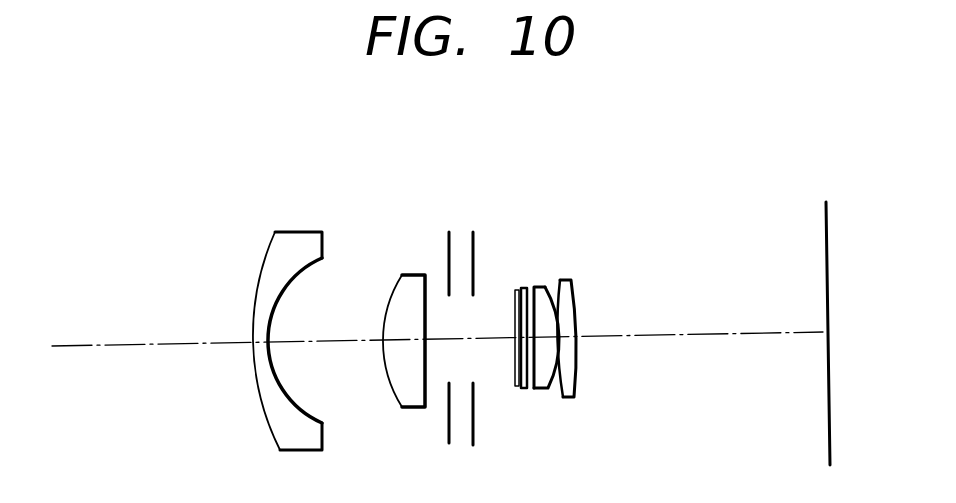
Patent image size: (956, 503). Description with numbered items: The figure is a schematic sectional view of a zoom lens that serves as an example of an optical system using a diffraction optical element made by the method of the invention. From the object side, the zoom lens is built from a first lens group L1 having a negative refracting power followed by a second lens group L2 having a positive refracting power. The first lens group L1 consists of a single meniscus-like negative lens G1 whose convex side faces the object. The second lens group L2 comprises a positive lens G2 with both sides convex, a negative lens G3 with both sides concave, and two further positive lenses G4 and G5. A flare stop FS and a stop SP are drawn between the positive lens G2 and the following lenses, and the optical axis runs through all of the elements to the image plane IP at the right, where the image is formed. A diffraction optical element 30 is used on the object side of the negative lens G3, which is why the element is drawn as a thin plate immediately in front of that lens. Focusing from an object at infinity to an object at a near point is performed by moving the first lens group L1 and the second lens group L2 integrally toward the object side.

The first lens group L1 is at (252, 157).
The second lens group L2 is at (378, 157).
The meniscus-like negative lens G1 is at (298, 232).
The positive lens G2 is at (413, 275).
The negative lens G3 is at (524, 288).
The positive lens G4 is at (547, 287).
The positive lens G5 is at (571, 280).
The flare stop FS is at (450, 232).
The stop SP is at (478, 242).
The diffraction optical element 30 is at (517, 388).
The image plane IP is at (828, 215).